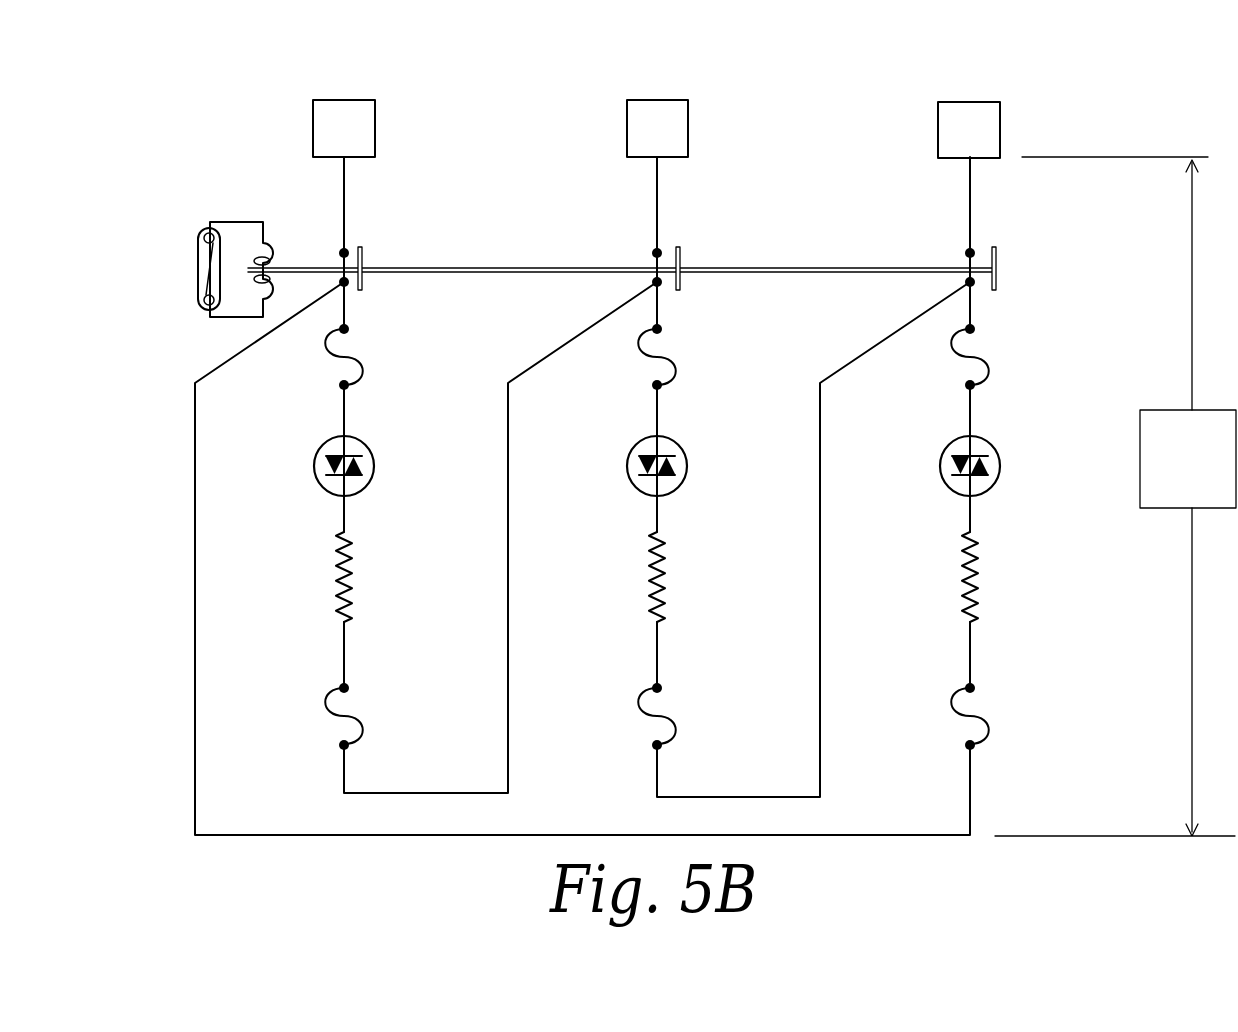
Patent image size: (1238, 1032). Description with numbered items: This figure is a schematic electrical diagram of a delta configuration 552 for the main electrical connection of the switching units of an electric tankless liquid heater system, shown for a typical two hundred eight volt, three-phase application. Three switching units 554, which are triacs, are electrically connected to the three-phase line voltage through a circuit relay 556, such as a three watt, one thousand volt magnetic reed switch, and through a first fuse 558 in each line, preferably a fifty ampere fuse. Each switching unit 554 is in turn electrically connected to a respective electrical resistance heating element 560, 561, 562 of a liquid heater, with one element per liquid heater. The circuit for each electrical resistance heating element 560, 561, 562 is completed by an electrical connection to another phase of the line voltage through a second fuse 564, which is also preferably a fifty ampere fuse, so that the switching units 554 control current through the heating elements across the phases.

The delta configuration 552 is at (1094, 122).
The switching unit 554 is at (374, 466).
The circuit relay 556 is at (187, 254).
The first fuse 558 is at (360, 336).
The electrical resistance heating element 560 is at (353, 573).
The electrical resistance heating element 561 is at (666, 574).
The electrical resistance heating element 562 is at (980, 575).
The second fuse 564 is at (340, 729).